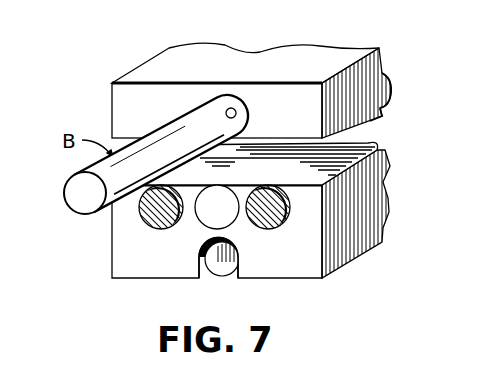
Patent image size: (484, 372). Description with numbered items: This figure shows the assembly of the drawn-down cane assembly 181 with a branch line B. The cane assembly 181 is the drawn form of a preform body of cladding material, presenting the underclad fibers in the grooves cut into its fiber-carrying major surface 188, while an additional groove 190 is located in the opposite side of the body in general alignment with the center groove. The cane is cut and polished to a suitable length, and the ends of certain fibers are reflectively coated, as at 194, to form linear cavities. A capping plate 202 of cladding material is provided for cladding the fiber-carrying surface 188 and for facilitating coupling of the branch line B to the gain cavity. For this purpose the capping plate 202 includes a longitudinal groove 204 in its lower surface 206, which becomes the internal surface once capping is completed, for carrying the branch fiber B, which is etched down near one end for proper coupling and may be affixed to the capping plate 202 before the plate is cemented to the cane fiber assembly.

The cane assembly 181 is at (347, 265).
The major surface 188 is at (350, 161).
The additional groove 190 is at (237, 268).
The reflective coating 194 is at (143, 226).
The capping plate 202 is at (381, 84).
The longitudinal groove 204 is at (238, 118).
The lower surface 206 is at (371, 106).